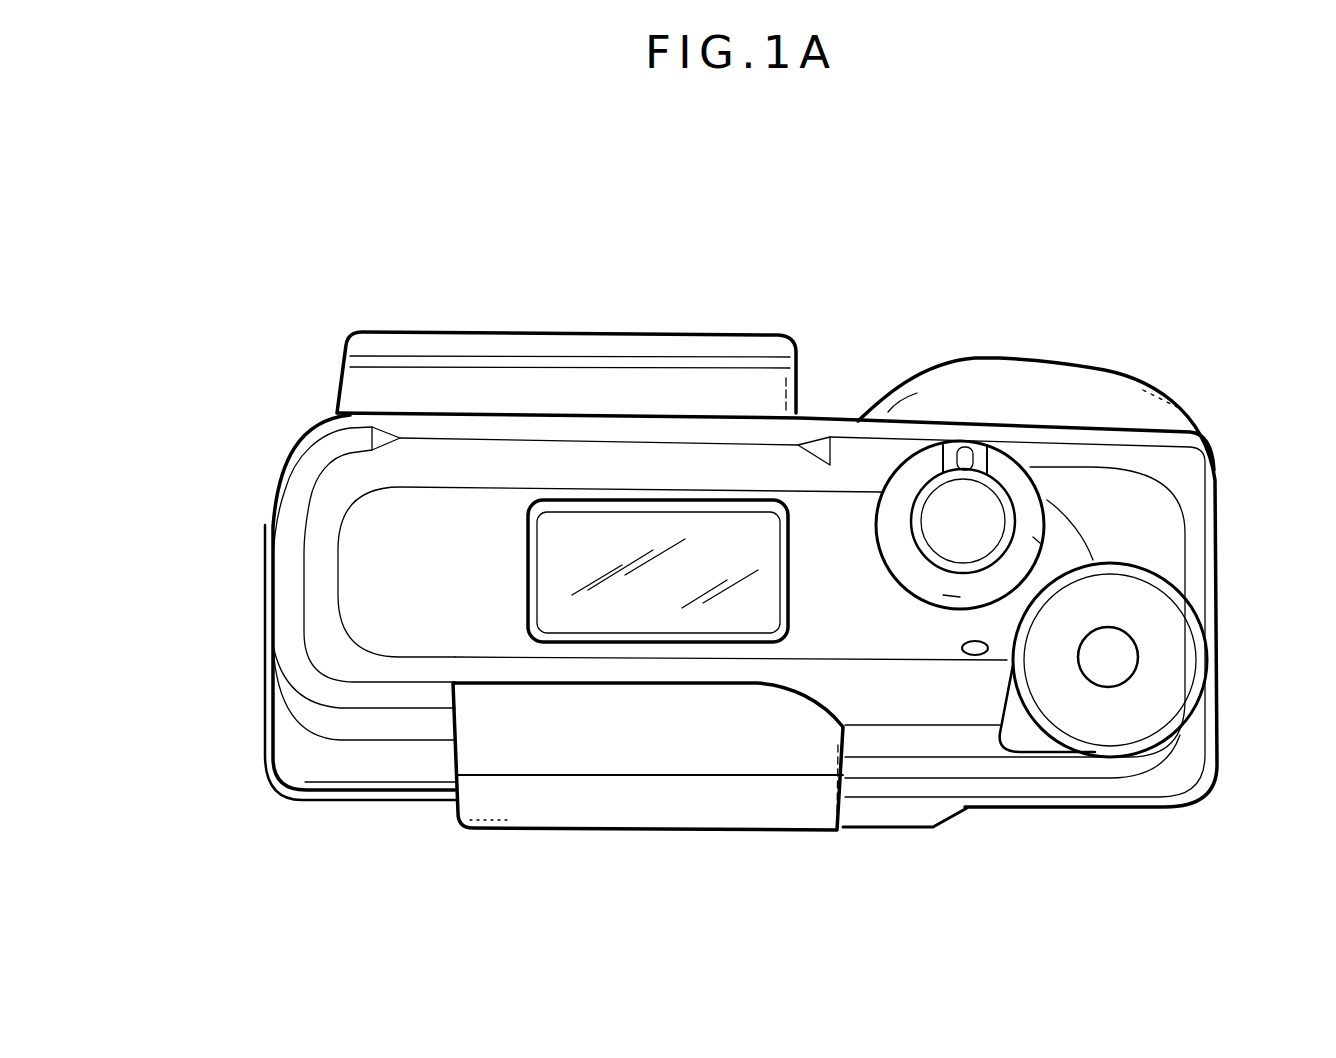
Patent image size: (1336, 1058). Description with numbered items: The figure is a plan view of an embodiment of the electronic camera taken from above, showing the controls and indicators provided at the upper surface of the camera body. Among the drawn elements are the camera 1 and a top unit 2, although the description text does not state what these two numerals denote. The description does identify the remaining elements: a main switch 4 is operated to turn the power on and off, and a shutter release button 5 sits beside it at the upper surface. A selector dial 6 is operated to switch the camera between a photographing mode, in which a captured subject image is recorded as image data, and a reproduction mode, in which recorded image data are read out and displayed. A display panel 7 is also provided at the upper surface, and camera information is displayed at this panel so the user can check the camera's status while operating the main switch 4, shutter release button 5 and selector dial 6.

The digital camera 1 is at (218, 648).
The flash unit 2 is at (735, 328).
The main switch 4 is at (928, 457).
The shutter release button 5 is at (985, 517).
The selector dial 6 is at (1158, 683).
The display panel 7 is at (617, 528).